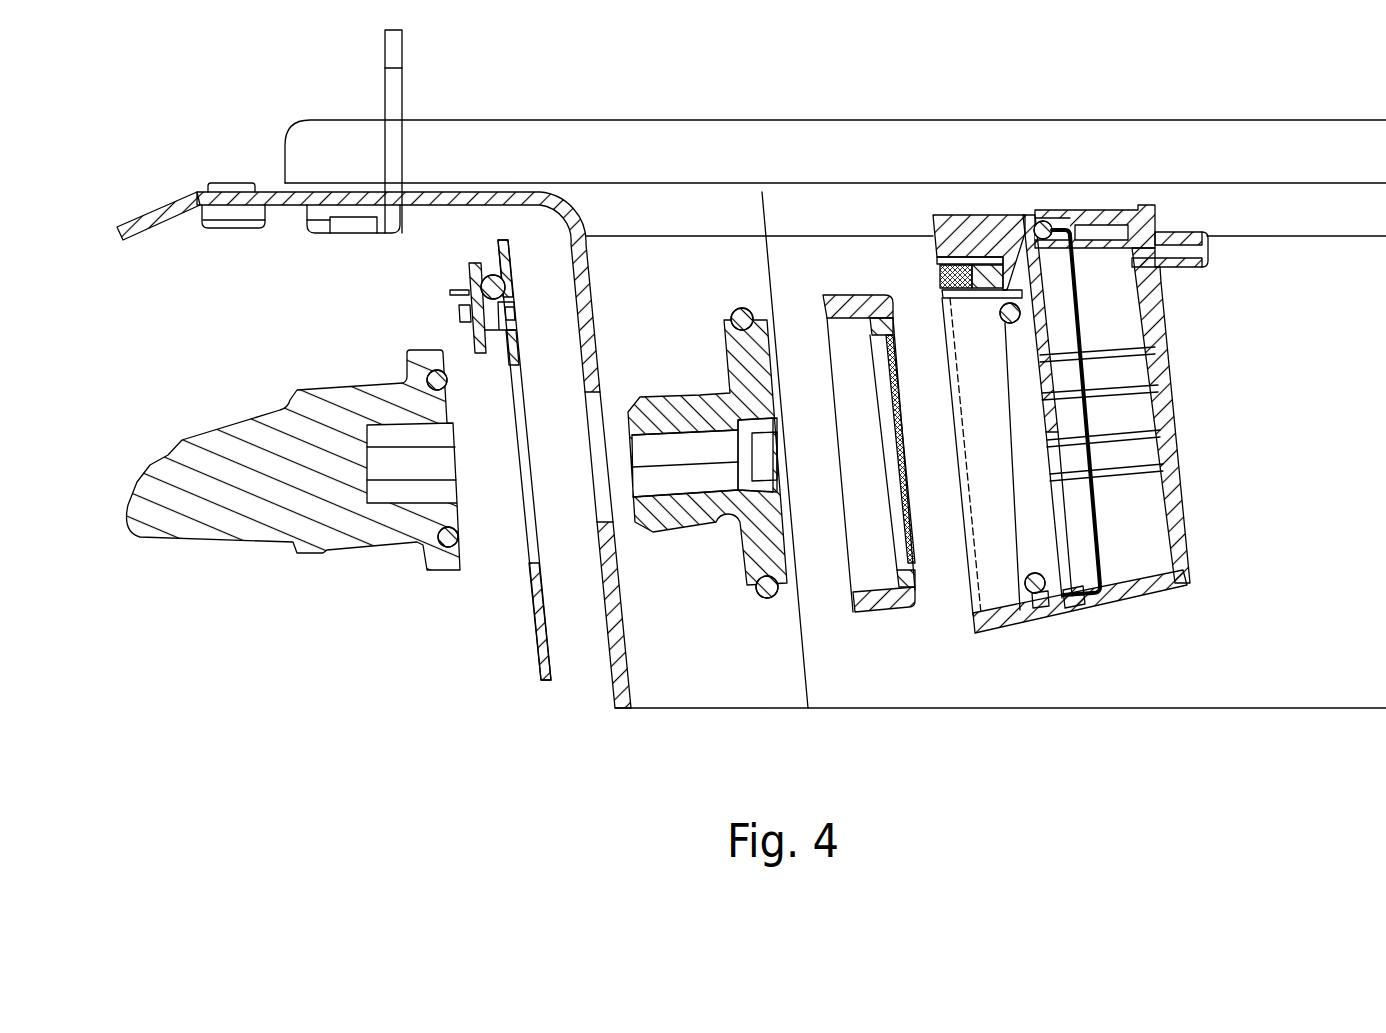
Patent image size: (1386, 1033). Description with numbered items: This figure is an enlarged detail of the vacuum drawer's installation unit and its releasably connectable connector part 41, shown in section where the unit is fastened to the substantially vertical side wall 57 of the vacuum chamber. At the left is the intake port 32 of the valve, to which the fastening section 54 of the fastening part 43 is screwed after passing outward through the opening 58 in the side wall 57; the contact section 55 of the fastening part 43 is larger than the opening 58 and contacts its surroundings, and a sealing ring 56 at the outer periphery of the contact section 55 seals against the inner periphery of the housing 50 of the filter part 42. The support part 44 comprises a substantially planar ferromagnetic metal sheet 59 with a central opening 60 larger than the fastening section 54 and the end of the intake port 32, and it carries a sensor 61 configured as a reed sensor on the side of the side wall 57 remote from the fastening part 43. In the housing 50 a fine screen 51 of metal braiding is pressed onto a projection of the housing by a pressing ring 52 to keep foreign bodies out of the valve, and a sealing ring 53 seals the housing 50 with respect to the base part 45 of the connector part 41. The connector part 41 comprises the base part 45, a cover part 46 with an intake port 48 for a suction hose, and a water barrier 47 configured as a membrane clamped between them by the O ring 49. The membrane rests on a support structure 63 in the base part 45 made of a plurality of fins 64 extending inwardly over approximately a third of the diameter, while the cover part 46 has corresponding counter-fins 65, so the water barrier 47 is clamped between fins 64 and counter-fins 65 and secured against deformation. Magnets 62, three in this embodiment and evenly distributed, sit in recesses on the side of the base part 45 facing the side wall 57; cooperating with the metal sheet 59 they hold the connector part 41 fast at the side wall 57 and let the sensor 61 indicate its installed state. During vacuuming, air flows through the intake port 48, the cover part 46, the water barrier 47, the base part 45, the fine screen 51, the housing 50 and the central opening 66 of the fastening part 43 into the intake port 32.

The intake port 32 is at (317, 553).
The connector part 41 is at (1084, 456).
The filter part 42 is at (870, 482).
The fastening part 43 is at (735, 675).
The support part 44 is at (527, 718).
The base part 45 is at (997, 232).
The cover part 46 is at (1117, 208).
The water barrier 47 is at (1080, 317).
The intake port 48 is at (1190, 252).
The O ring 49 is at (1045, 220).
The housing 50 is at (839, 292).
The fine screen 51 is at (912, 520).
The pressing ring 52 is at (872, 296).
The sealing ring 53 is at (1032, 597).
The fastening section 54 is at (707, 469).
The contact section 55 is at (733, 353).
The sealing ring 56 is at (760, 600).
The side wall 57 is at (613, 665).
The opening 58 is at (597, 503).
The metal sheet 59 is at (535, 652).
The central opening 60 is at (500, 464).
The sensor 61 is at (395, 286).
The magnets 62 is at (962, 265).
The support structure 63 is at (1032, 512).
The fins 64 is at (1043, 372).
The counter-fins 65 is at (1143, 372).
The central opening 66 is at (675, 478).